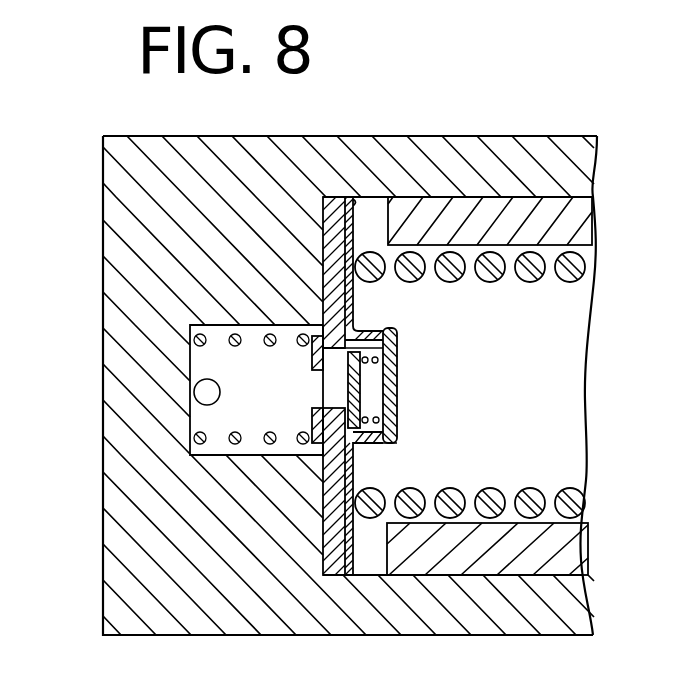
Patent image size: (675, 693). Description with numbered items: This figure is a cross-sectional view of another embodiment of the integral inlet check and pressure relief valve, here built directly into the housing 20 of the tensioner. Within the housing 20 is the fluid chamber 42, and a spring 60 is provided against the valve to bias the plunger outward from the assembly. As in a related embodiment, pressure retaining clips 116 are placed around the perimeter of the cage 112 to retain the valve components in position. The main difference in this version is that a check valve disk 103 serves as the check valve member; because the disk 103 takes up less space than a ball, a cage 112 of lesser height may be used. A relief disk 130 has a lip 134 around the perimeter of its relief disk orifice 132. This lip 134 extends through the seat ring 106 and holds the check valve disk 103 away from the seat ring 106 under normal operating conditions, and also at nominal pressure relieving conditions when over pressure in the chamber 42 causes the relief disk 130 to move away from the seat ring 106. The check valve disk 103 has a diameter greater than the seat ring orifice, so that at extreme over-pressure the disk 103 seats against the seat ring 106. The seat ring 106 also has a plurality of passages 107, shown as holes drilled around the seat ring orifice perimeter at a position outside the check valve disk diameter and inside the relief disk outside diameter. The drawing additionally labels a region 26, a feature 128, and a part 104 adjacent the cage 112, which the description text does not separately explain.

The housing 20 is at (112, 263).
The cavity with passage 26 is at (195, 392).
The heater wire holes 128 is at (195, 437).
The fluid chamber 42 is at (548, 293).
The spring 60 is at (572, 508).
The seat ring 106 is at (334, 197).
The pressure retaining clips 116 is at (352, 197).
The passages 107 is at (343, 348).
The cage 112 is at (397, 363).
The check valve disk 103 is at (362, 392).
The lower foot 104 is at (380, 425).
The relief disk 130 is at (312, 348).
The lip 134 is at (338, 374).
The relief disk orifice 132 is at (325, 395).